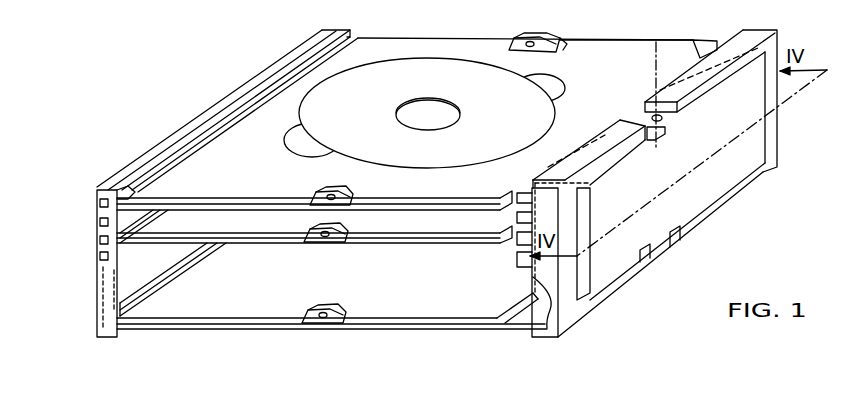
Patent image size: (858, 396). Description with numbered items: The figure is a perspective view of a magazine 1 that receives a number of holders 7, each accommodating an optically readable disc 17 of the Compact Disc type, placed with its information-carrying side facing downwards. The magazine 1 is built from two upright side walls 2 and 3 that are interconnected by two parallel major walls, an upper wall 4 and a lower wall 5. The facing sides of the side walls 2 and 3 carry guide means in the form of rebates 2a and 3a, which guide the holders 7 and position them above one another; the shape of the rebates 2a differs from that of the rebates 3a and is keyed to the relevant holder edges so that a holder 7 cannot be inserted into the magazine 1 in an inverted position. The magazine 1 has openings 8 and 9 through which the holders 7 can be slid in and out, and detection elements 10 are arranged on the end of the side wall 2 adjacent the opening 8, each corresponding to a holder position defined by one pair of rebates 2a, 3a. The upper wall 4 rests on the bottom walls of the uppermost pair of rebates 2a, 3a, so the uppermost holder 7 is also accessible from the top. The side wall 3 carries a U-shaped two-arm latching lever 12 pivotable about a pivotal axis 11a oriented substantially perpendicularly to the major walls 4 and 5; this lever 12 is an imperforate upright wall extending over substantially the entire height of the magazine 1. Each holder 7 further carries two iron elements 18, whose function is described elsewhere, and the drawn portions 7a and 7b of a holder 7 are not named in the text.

The magazine 1 is at (398, 332).
The side wall 2 is at (153, 148).
The rebate 2a is at (130, 187).
The side wall 3 is at (762, 170).
The rebate 3a is at (512, 238).
The upper wall 4 is at (191, 208).
The lower wall 5 is at (300, 330).
The holder 7 is at (402, 45).
The platen end edge 7a is at (510, 207).
The platen lug 7b is at (707, 43).
The opening 8 is at (148, 276).
The opening 9 is at (608, 38).
The detection element 10 is at (99, 203).
The pivotal axis 11a is at (655, 64).
The latching lever 12 is at (690, 200).
The optically readable disc 17 is at (462, 73).
The iron element 18 is at (313, 197).